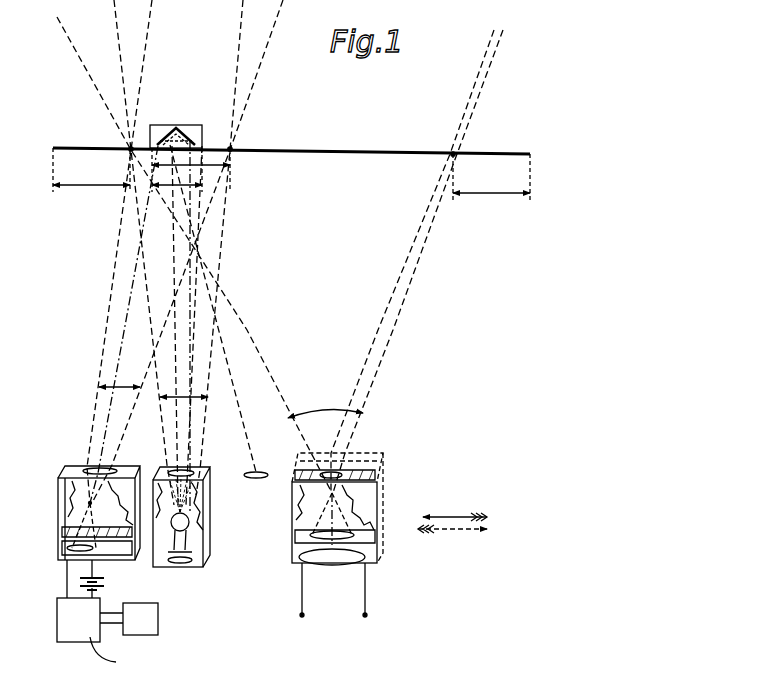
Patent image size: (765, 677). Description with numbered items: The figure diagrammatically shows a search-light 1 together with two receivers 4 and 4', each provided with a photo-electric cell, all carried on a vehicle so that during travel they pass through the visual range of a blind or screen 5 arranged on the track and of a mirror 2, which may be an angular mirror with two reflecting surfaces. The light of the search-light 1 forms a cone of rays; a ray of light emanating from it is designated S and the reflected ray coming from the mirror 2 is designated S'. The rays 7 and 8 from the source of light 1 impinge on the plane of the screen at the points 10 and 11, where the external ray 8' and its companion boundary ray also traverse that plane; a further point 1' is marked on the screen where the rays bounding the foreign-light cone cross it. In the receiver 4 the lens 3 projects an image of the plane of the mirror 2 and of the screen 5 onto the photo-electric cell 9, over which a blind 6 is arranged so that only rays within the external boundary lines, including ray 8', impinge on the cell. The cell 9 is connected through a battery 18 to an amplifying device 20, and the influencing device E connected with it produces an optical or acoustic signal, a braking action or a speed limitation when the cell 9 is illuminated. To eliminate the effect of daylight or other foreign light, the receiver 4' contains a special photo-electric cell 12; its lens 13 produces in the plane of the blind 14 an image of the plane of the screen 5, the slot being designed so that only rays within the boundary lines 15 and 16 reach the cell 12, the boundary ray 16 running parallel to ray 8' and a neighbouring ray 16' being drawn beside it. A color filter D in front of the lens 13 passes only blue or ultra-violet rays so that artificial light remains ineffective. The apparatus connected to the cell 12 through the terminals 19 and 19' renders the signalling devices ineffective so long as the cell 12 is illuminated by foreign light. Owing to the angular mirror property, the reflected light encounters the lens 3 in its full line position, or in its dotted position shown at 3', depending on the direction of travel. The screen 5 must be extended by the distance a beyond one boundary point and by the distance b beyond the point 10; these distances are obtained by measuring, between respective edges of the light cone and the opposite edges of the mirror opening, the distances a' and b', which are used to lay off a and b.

The search-light 1 is at (194, 517).
The image point of light source 1' is at (443, 144).
The mirror 2 is at (178, 131).
The lens 3 is at (94, 476).
The dotted line position of lens 3' is at (259, 463).
The receiver 4 is at (86, 513).
The receiver 4' is at (351, 508).
The blind or screen 5 is at (336, 151).
The blind 6 is at (118, 535).
The ray 7 is at (103, 353).
The ray 8 is at (219, 247).
The external ray 8' is at (187, 251).
The photo-electric cell 9 is at (58, 563).
The point 10 is at (129, 148).
The point 11 is at (232, 149).
The photo-electric cell 12 is at (313, 567).
The lens 13 is at (353, 493).
The blind 14 is at (368, 552).
The boundary ray 15 is at (278, 402).
The boundary ray 16 is at (418, 261).
The light ray 16' is at (412, 261).
The battery 18 is at (104, 580).
The terminal 19 is at (301, 602).
The terminal 19' is at (366, 602).
The amplifying device 20 is at (121, 636).
The distance a is at (491, 193).
The distance b is at (91, 188).
The distance a' is at (177, 187).
The distance b' is at (191, 165).
The ray of light S is at (183, 326).
The reflected ray S' is at (124, 324).
The color filter D is at (347, 457).
The influencing device E is at (140, 619).